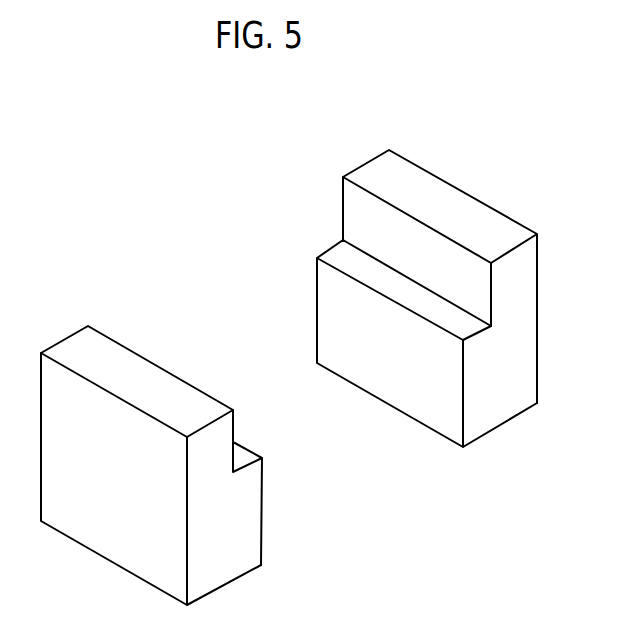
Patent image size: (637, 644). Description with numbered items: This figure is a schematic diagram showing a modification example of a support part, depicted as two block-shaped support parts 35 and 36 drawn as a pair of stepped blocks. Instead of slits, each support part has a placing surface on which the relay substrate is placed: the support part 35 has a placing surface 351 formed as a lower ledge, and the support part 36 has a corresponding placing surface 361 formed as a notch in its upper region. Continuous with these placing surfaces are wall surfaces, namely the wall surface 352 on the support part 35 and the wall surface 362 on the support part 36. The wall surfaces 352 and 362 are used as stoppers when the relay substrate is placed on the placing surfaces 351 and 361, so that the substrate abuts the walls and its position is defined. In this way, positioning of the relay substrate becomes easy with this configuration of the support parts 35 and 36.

The support part 35 is at (390, 267).
The placing surface 351 is at (330, 257).
The wall surface 352 is at (348, 207).
The support part 36 is at (175, 426).
The placing surface 361 is at (245, 458).
The wall surface 362 is at (147, 357).